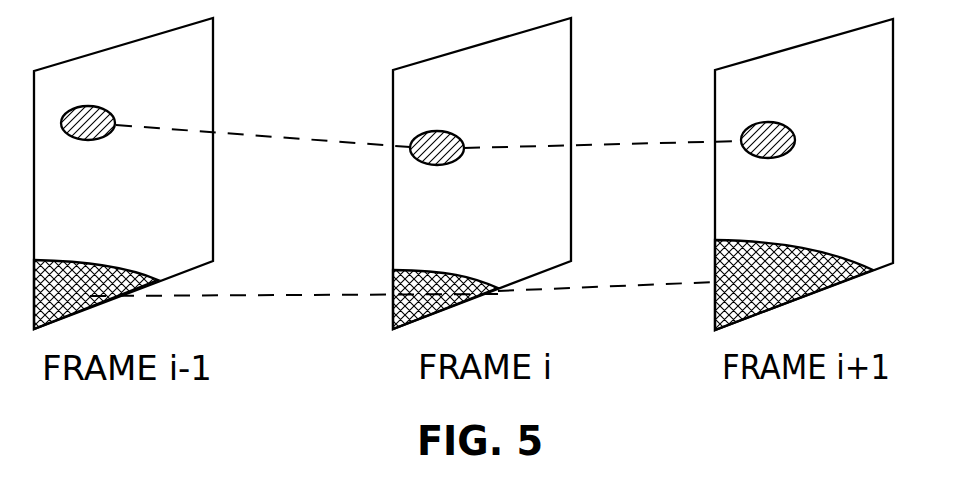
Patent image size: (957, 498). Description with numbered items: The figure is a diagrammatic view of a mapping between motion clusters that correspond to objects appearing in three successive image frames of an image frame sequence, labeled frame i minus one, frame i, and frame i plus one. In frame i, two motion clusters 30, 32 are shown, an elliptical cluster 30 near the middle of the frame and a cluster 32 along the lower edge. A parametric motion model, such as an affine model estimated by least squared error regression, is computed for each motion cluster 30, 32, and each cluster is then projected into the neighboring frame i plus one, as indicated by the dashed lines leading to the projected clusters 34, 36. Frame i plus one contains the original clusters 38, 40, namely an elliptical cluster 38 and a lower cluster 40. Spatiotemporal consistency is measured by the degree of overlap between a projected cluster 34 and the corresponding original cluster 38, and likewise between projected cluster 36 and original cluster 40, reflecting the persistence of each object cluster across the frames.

The motion cluster 30 is at (443, 133).
The motion cluster 32 is at (442, 270).
The projected cluster 34 is at (645, 142).
The projected cluster 36 is at (643, 282).
The original cluster 38 is at (780, 124).
The original cluster 40 is at (792, 240).